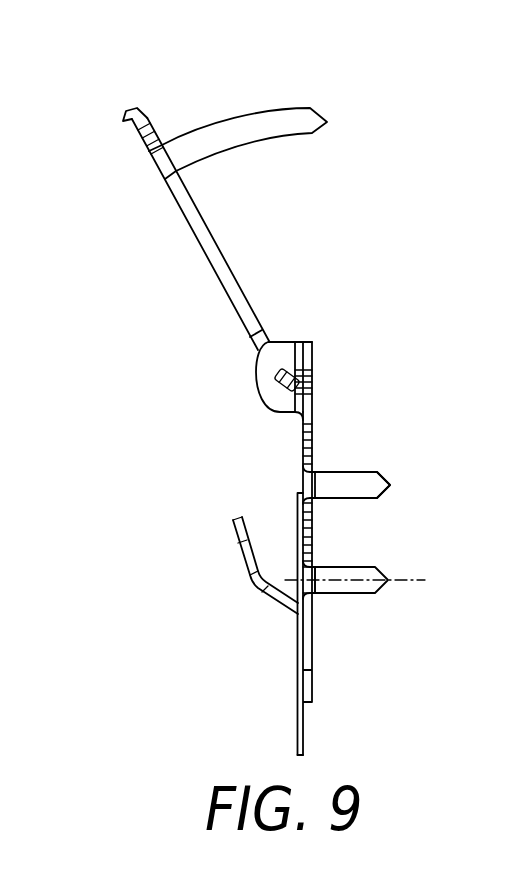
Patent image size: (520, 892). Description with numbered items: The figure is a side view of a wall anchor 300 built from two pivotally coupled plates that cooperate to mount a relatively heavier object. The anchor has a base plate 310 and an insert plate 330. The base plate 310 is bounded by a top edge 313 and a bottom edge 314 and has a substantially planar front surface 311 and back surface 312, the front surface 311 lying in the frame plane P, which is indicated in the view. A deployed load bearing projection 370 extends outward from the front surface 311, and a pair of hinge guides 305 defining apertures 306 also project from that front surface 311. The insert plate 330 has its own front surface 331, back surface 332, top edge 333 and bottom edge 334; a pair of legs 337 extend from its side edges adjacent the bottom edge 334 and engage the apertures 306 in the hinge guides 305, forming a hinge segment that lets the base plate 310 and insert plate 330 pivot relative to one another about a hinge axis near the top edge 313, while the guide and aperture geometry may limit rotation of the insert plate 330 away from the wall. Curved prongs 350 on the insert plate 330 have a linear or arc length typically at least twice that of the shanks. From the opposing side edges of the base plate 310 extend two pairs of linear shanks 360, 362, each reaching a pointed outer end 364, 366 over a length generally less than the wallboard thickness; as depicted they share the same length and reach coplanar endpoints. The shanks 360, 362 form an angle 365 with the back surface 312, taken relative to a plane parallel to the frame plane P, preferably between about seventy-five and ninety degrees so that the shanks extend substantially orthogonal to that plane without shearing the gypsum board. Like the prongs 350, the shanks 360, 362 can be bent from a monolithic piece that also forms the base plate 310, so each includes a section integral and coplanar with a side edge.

The wall anchor 300 is at (408, 98).
The hinge guides 305 is at (287, 350).
The apertures 306 is at (300, 371).
The base plate 310 is at (270, 654).
The front surface 311 is at (300, 481).
The back surface 312 is at (313, 673).
The top edge 313 is at (308, 340).
The bottom edge 314 is at (305, 705).
The insert plate 330 is at (284, 185).
The front surface 331 is at (206, 260).
The back surface 332 is at (236, 281).
The top edge 333 is at (123, 112).
The bottom edge 334 is at (303, 397).
The legs 337 is at (276, 388).
The curved prongs 350 is at (288, 111).
The linear shanks 360 is at (355, 477).
The linear shanks 362 is at (353, 595).
The pointed outer end 364 is at (388, 487).
The angle 365 is at (341, 578).
The pointed outer end 366 is at (423, 579).
The load bearing projection 370 is at (240, 562).